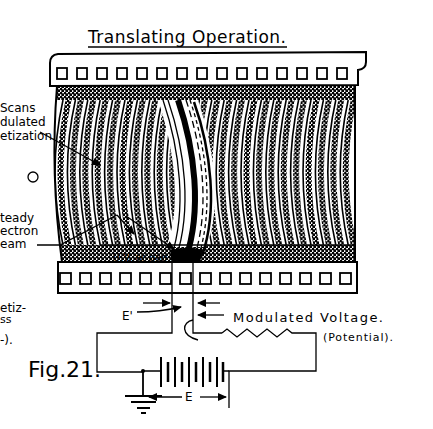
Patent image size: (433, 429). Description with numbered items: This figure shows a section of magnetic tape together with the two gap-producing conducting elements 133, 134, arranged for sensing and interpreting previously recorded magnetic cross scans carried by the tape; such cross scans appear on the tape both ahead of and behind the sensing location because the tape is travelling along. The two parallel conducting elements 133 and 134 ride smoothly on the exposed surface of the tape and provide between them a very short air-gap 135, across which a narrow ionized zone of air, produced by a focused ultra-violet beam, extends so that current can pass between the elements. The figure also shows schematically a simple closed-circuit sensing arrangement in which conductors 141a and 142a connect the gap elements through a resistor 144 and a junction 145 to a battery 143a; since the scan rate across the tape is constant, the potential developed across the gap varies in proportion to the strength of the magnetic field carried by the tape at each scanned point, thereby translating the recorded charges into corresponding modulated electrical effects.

The conducting element 133 is at (170, 112).
The conducting element 134 is at (203, 107).
The gap 135 is at (184, 100).
The conductor 141a is at (107, 333).
The conductor 142a is at (268, 369).
The battery 143a is at (187, 358).
The resistor 144 is at (270, 335).
The junction 145 is at (205, 306).